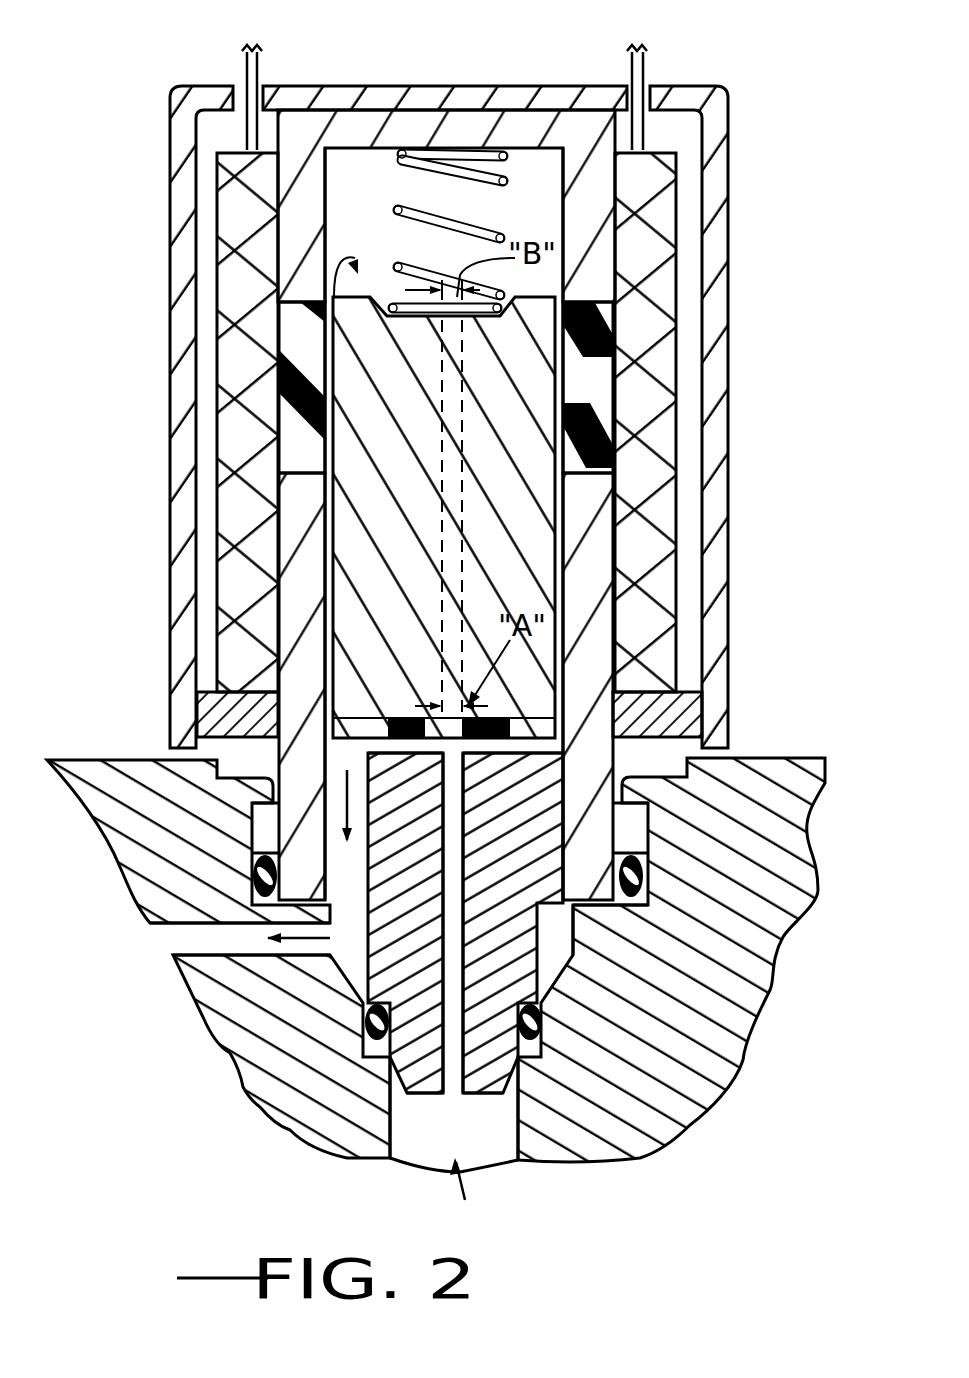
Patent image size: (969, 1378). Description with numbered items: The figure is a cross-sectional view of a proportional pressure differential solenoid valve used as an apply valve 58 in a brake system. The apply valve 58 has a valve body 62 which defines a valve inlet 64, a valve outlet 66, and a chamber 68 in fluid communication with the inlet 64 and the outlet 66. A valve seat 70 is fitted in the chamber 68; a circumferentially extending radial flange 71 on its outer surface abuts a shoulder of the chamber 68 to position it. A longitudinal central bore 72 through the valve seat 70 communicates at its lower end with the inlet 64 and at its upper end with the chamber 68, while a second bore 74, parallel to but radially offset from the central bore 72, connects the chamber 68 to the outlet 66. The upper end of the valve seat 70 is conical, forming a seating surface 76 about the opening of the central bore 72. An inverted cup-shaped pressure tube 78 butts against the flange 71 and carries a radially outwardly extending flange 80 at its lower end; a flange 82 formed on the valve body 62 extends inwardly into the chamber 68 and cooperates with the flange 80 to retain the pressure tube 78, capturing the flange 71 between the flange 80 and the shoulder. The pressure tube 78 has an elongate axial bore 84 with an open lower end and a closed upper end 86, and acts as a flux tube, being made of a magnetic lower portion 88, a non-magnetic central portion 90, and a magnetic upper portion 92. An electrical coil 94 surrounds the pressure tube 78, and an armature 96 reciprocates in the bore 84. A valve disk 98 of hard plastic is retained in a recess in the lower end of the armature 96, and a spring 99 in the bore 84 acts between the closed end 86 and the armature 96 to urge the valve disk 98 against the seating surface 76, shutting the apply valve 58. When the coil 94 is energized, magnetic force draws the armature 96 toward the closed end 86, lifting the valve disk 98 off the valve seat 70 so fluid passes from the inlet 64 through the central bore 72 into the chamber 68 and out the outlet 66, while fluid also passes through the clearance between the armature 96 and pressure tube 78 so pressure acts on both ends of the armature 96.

The apply valve 58 is at (798, 101).
The valve body 62 is at (748, 960).
The valve inlet 64 is at (493, 1133).
The valve outlet 66 is at (178, 937).
The chamber 68 is at (592, 790).
The valve seat 70 is at (493, 947).
The radial flange 71 is at (665, 932).
The central bore 72 is at (455, 1080).
The second bore 74 is at (252, 880).
The seating surface 76 is at (532, 738).
The pressure tube 78 is at (597, 790).
The flange 80 is at (345, 838).
The flange 82 is at (245, 745).
The axial bore 84 is at (562, 205).
The closed upper end 86 is at (355, 158).
The magnetic lower portion 88 is at (598, 540).
The non-magnetic central portion 90 is at (598, 380).
The magnetic upper portion 92 is at (293, 188).
The electrical coil 94 is at (237, 262).
The armature 96 is at (345, 440).
The valve disk 98 is at (470, 708).
The spring 99 is at (508, 155).